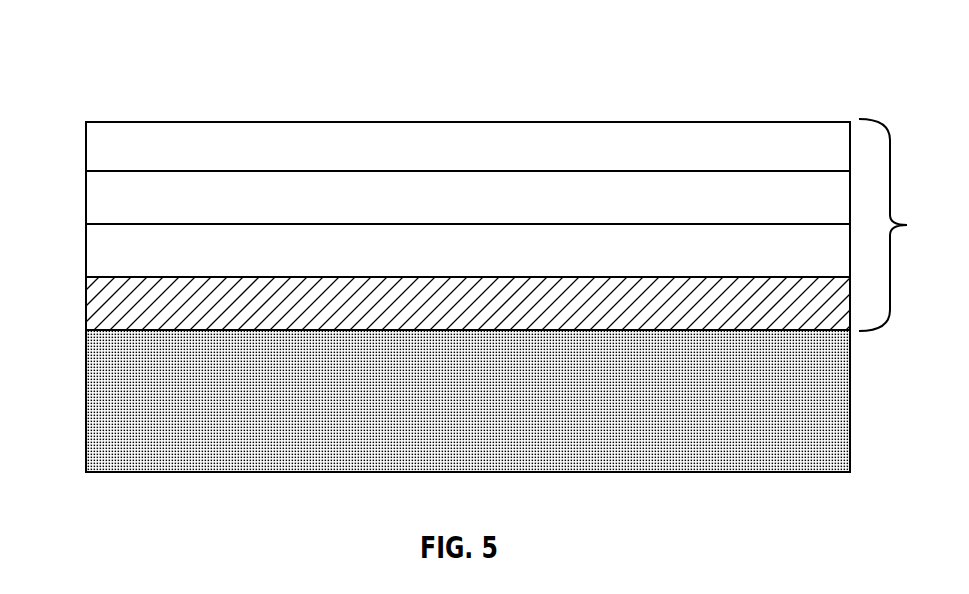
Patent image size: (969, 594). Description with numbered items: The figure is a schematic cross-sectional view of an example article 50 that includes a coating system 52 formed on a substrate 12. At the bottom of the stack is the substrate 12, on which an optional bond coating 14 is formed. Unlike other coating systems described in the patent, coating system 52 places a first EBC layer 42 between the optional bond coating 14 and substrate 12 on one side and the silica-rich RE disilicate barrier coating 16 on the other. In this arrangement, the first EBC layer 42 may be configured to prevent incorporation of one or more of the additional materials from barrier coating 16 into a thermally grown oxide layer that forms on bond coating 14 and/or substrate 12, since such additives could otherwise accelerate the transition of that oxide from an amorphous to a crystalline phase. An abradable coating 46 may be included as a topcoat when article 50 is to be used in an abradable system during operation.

The article 50 is at (816, 63).
The coating system 52 is at (899, 225).
The abradable coating 46 is at (86, 140).
The silica-rich RE disilicate barrier coating 16 is at (86, 188).
The first EBC layer 42 is at (86, 250).
The bond coating 14 is at (86, 305).
The substrate 12 is at (86, 418).